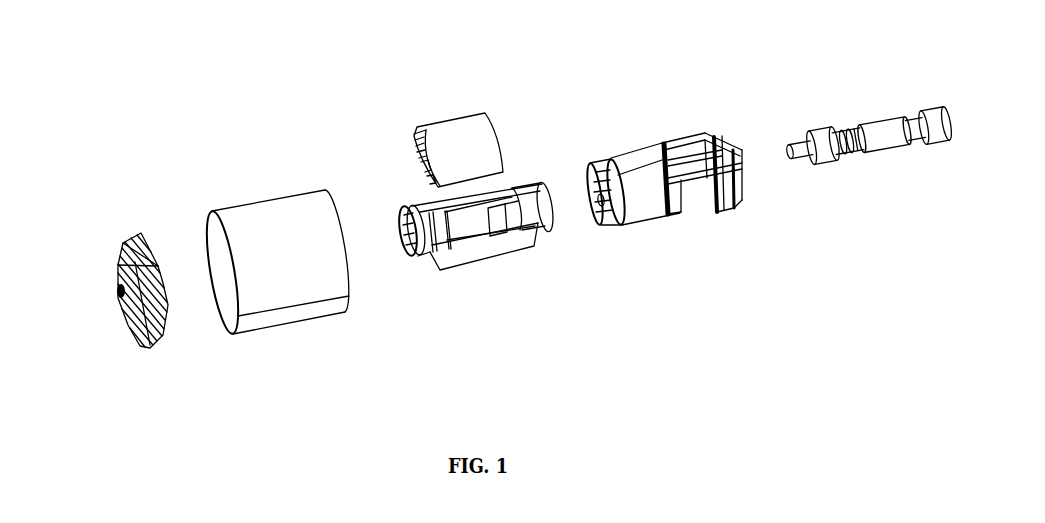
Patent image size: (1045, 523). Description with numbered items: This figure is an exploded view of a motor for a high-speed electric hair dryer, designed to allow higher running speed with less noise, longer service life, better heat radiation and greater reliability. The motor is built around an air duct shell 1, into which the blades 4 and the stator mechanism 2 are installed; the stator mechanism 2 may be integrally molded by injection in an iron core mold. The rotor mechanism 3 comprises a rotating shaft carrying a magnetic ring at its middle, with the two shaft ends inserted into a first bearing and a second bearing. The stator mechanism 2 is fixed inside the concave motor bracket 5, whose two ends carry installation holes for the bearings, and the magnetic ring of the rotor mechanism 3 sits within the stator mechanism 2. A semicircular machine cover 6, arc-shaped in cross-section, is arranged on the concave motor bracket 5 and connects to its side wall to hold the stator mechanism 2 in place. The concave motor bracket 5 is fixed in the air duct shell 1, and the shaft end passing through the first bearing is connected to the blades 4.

The air duct shell 1 is at (232, 225).
The stator mechanism 2 is at (626, 134).
The rotor mechanism 3 is at (859, 92).
The blades 4 is at (99, 257).
The concave motor bracket 5 is at (434, 188).
The semicircular machine cover 6 is at (427, 112).